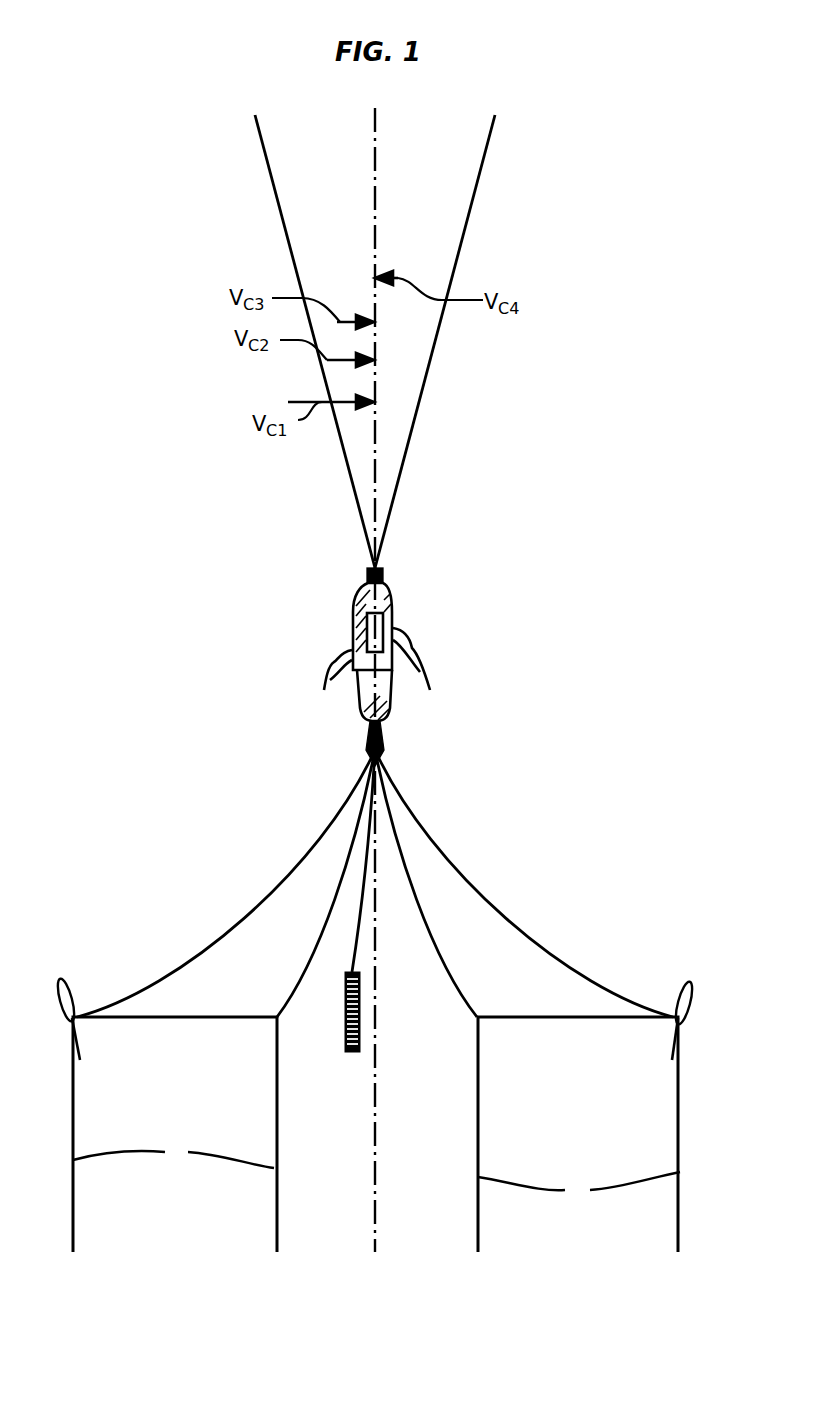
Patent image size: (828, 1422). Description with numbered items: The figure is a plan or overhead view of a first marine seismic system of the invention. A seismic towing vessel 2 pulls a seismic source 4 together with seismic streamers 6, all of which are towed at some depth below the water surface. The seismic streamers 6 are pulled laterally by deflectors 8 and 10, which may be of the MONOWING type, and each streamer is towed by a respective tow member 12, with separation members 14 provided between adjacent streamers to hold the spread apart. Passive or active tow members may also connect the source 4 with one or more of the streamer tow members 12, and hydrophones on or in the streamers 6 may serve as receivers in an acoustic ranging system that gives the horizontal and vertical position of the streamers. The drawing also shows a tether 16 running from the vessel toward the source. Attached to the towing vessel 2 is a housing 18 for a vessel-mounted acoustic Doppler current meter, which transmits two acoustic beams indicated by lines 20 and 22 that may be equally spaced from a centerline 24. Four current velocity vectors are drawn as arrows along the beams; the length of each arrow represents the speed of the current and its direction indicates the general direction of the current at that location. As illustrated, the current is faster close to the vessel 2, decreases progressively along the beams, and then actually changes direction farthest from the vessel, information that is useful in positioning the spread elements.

The seismic towing vessel 2 is at (398, 592).
The seismic source 4 is at (352, 1052).
The seismic streamers 6 is at (376, 1174).
The deflector 8 is at (82, 1035).
The deflector 10 is at (668, 1040).
The tow members 12 is at (333, 910).
The separation members 14 is at (222, 1020).
The tether 16 is at (360, 868).
The housing 18 is at (366, 572).
The line 20 is at (417, 447).
The line 22 is at (337, 458).
The centerline 24 is at (378, 157).